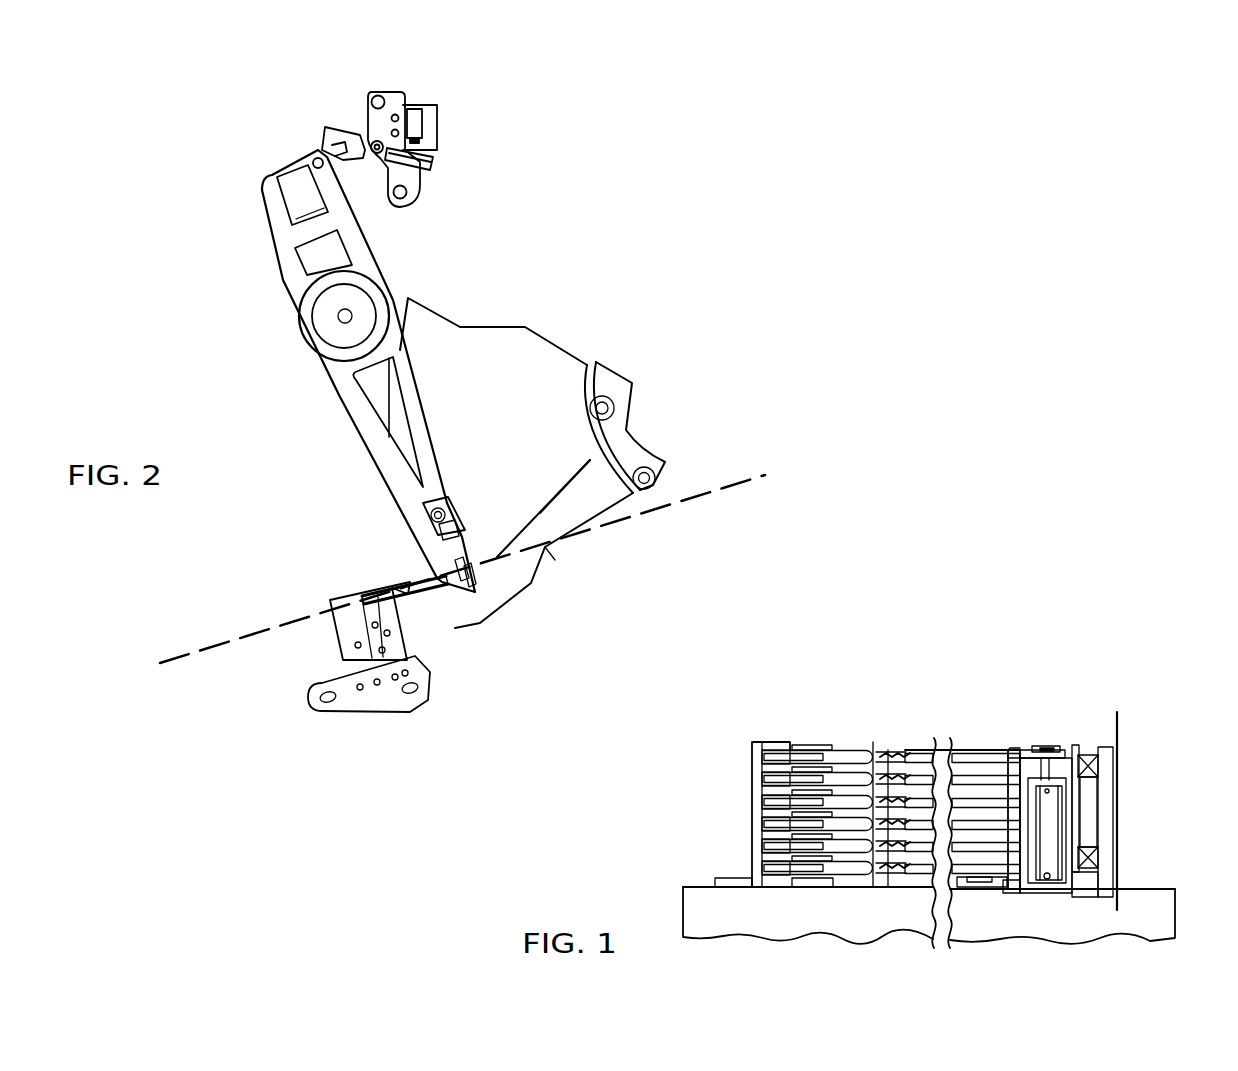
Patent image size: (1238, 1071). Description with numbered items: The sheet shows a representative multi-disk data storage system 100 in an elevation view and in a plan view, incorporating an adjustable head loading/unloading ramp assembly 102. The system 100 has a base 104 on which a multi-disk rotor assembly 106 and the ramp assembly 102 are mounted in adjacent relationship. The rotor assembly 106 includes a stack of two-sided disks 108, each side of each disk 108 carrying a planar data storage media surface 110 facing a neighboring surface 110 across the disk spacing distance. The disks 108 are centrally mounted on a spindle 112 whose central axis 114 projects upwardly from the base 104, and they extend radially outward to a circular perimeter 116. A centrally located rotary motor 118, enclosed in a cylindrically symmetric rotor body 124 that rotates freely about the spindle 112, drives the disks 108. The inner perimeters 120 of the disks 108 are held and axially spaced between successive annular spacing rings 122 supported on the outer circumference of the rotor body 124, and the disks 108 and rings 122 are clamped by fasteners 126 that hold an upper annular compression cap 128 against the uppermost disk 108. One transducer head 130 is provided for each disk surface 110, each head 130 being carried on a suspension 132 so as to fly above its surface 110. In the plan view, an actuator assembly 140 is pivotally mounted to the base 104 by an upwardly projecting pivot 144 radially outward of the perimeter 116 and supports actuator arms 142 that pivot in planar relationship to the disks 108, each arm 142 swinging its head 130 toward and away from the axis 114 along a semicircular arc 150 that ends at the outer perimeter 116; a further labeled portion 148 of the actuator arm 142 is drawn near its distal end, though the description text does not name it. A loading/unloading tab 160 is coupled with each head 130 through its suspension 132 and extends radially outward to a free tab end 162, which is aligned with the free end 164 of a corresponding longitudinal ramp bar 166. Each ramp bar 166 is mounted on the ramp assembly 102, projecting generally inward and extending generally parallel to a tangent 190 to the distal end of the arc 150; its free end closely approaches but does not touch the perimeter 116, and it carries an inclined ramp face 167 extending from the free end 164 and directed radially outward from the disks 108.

In FIG. 2, the multi-disk data storage system 100 is at (660, 210).
In FIG. 1, the multi-disk data storage system 100 is at (1096, 656).
In FIG. 2, the ramp assembly 102 is at (273, 607).
In FIG. 1, the ramp assembly 102 is at (735, 776).
In FIG. 1, the base 104 is at (779, 928).
In FIG. 1, the multi-disk rotor assembly 106 is at (1072, 787).
In FIG. 2, the disk 108 is at (497, 467).
In FIG. 1, the disk 108 is at (957, 755).
In FIG. 2, the disk data storage media surface 110 is at (516, 463).
In FIG. 1, the spindle 112 is at (1110, 760).
In FIG. 1, the central axis 114 is at (1118, 852).
In FIG. 2, the circular perimeter 116 is at (408, 514).
In FIG. 1, the circular perimeter 116 is at (873, 886).
In FIG. 1, the rotary motor 118 is at (1096, 776).
In FIG. 2, the inner perimeter 120 is at (600, 489).
In FIG. 1, the annular spacing ring 122 is at (1013, 786).
In FIG. 1, the rotor body 124 is at (1090, 887).
In FIG. 1, the fastener 126 is at (1056, 748).
In FIG. 1, the upper annular compression cap 128 is at (1036, 750).
In FIG. 1, the transducer head 130 is at (947, 752).
In FIG. 2, the suspension 132 is at (476, 568).
In FIG. 1, the suspension 132 is at (894, 750).
In FIG. 2, the actuator assembly 140 is at (408, 256).
In FIG. 2, the actuator arm 142 is at (347, 404).
In FIG. 2, the pivot 144 is at (340, 322).
In FIG. 2, the arm tip 148 is at (398, 497).
In FIG. 2, the semicircular arc 150 is at (611, 447).
In FIG. 2, the loading/unloading tab 160 is at (445, 574).
In FIG. 1, the loading/unloading tab 160 is at (876, 759).
In FIG. 2, the free tab end 162 is at (448, 600).
In FIG. 1, the free tab end 162 is at (878, 752).
In FIG. 1, the bar free end 164 is at (872, 752).
In FIG. 1, the longitudinal ramp bar 166 is at (810, 742).
In FIG. 2, the inclined ramp face 167 is at (442, 606).
In FIG. 1, the inclined ramp face 167 is at (860, 753).
In FIG. 2, the tangent 190 is at (464, 571).